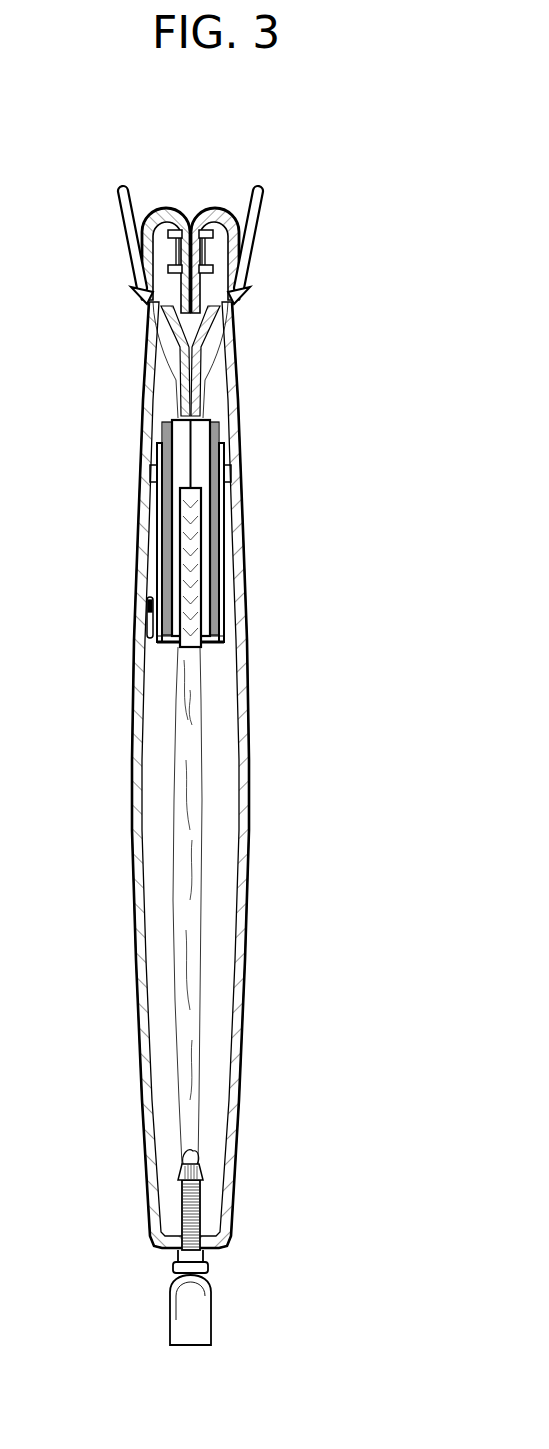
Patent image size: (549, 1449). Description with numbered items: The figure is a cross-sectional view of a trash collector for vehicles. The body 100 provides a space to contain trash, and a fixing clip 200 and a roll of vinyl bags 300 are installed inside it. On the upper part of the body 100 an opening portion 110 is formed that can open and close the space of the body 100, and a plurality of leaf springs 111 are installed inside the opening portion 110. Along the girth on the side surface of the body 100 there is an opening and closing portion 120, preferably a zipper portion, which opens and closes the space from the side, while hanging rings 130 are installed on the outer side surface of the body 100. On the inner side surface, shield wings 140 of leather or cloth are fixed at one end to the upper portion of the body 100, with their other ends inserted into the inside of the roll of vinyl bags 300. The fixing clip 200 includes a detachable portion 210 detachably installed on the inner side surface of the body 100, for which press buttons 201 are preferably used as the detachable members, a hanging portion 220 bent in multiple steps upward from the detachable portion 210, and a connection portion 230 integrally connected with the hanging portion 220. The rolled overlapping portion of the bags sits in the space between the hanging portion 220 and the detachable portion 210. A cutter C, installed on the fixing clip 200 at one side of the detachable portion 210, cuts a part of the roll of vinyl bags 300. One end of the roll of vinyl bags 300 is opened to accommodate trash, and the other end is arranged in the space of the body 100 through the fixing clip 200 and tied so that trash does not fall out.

The body 100 is at (252, 838).
The opening portion 110 is at (278, 219).
The leaf springs 111 is at (232, 212).
The opening and closing portion 120 is at (207, 1207).
The hanging rings 130 is at (245, 255).
The shield wings 140 is at (205, 355).
The fixing clip 200 is at (236, 558).
The press buttons 201 is at (227, 473).
The detachable portion 210 is at (220, 598).
The hanging portion 220 is at (226, 638).
The connection portion 230 is at (200, 445).
The roll of vinyl bags 300 is at (208, 725).
The cutter C is at (147, 616).